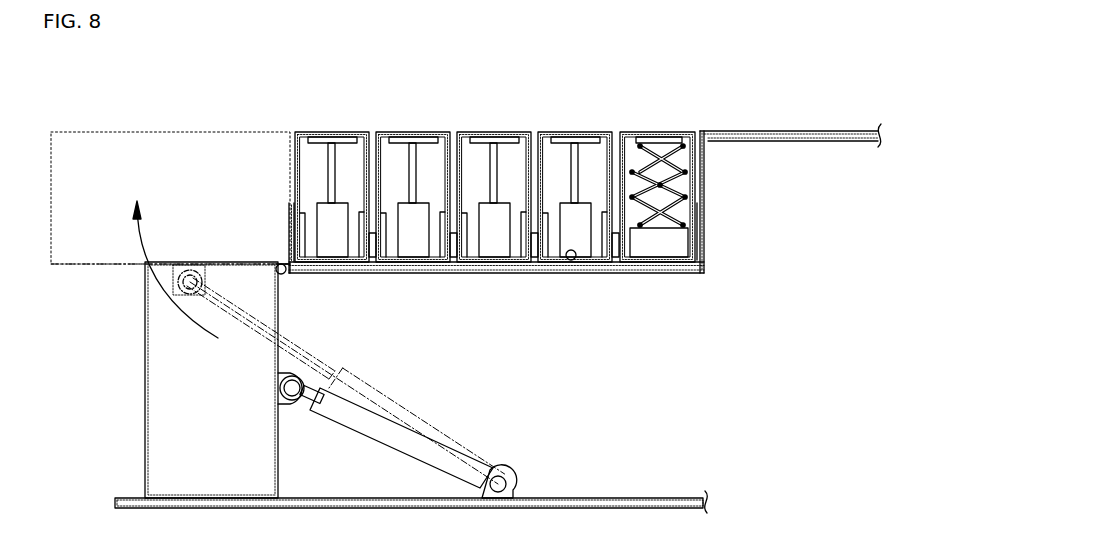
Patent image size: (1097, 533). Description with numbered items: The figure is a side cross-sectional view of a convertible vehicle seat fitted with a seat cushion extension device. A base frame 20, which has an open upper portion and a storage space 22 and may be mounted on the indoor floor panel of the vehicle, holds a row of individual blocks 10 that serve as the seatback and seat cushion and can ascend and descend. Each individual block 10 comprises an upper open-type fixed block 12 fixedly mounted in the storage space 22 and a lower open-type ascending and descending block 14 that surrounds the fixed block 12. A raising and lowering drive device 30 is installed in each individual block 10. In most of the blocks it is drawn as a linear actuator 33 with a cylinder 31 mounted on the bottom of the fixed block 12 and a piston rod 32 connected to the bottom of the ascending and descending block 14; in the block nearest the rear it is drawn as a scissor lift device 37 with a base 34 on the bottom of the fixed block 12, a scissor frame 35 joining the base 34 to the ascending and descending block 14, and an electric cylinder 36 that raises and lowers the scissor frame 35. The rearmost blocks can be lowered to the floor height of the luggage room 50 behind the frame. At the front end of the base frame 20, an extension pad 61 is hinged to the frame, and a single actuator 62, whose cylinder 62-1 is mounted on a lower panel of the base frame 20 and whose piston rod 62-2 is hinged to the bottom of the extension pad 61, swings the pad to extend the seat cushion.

The individual block 10 is at (535, 194).
The fixed block 12 is at (296, 194).
The ascending and descending block 14 is at (302, 131).
The base frame 20 is at (282, 223).
The storage space 22 is at (573, 260).
The raising and lowering drive device 30 is at (512, 216).
The cylinder 31 is at (337, 250).
The piston rod 32 is at (335, 193).
The linear actuator 33 is at (428, 287).
The base 34 is at (704, 258).
The scissor frame 35 is at (680, 213).
The electric cylinder 36 is at (680, 246).
The scissor lift device 37 is at (736, 232).
The luggage room 50 is at (804, 131).
The extension pad 61 is at (143, 357).
The actuator 62 is at (397, 381).
The cylinder 62-1 is at (462, 460).
The piston rod 62-2 is at (297, 348).